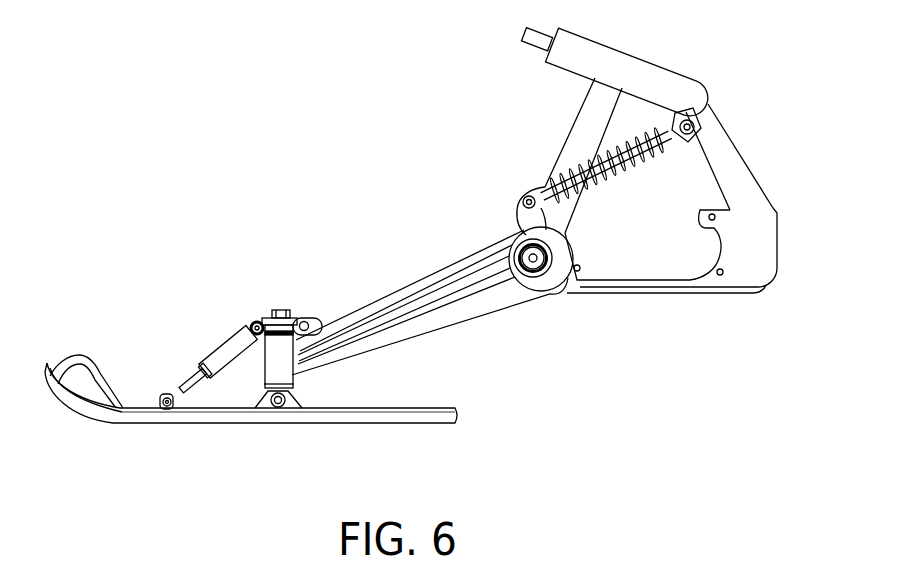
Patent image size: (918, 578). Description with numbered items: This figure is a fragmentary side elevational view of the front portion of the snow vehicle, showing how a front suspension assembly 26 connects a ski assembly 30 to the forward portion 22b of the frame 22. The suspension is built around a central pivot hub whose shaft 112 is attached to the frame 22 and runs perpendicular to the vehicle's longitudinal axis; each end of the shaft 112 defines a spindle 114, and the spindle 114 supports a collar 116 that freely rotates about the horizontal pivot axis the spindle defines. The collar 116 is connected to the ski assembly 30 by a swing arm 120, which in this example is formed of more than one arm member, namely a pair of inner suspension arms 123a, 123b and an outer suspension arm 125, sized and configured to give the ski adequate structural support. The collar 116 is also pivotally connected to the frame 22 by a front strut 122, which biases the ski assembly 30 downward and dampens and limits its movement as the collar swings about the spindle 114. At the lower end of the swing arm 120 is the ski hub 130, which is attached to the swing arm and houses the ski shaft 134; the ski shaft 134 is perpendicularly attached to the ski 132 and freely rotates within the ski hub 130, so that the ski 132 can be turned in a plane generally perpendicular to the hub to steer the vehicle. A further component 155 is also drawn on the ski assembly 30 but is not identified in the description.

The frame 22 is at (476, 148).
The forward portion of the frame 22b is at (228, 60).
The front suspension assembly 26 is at (306, 201).
The ski assembly 30 is at (136, 276).
The shaft 112 is at (583, 316).
The spindle 114 is at (533, 262).
The collar 116 is at (580, 310).
The swing arm 120 is at (430, 272).
The front strut 122 is at (602, 170).
The inner suspension arm 123a is at (447, 323).
The inner suspension arm 123b is at (428, 270).
The outer suspension arm 125 is at (462, 287).
The ski hub 130 is at (270, 366).
The ski 132 is at (180, 422).
The ski shaft 134 is at (260, 316).
The shock absorber 155 is at (224, 346).